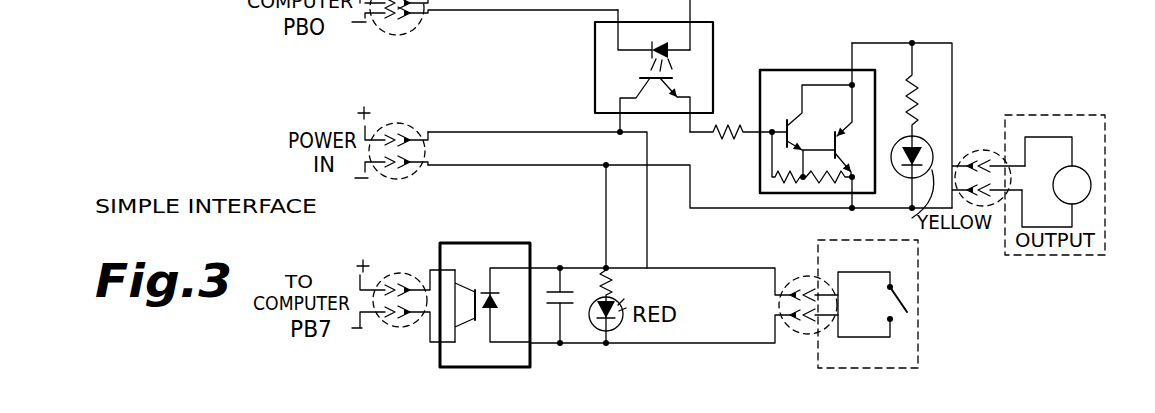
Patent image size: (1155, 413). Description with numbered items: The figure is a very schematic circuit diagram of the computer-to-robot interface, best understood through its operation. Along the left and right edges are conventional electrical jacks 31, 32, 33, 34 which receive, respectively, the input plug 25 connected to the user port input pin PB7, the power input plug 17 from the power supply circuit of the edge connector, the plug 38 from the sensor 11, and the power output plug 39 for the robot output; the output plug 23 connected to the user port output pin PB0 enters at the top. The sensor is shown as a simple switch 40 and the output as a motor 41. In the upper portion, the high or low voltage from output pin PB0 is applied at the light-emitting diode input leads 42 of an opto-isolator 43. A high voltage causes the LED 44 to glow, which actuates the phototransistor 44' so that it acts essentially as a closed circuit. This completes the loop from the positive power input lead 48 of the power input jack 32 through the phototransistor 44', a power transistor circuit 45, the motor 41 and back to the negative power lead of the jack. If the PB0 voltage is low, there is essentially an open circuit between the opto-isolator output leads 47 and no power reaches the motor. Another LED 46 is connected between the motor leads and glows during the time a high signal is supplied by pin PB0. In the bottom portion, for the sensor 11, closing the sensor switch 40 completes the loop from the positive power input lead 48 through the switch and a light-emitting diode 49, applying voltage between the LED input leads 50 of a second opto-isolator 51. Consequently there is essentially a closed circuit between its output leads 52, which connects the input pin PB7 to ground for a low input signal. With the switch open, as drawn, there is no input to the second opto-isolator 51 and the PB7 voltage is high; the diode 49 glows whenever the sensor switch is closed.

The sensor 11 is at (918, 337).
The power input plug 17 is at (377, 142).
The output plug 23 is at (378, 6).
The input plug 25 is at (377, 322).
The electrical jack 31 is at (405, 270).
The power input jack 32 is at (412, 124).
The electrical jack 33 is at (800, 277).
The electrical jack 34 is at (982, 148).
The sensor plug 38 is at (865, 304).
The power output plug 39 is at (1012, 168).
The sensor switch 40 is at (907, 298).
The motor 41 is at (1090, 170).
The light-emitting diode input leads 42 is at (613, 12).
The opto-isolator 43 is at (713, 38).
The LED 44 is at (687, 40).
The phototransistor 44' is at (618, 95).
The power transistor circuit 45 is at (876, 96).
The LED 46 is at (918, 132).
The opto-isolator output leads 47 is at (702, 193).
The positive power input lead 48 is at (486, 131).
The light-emitting diode 49 is at (625, 301).
The LED input leads 50 is at (556, 265).
The second opto-isolator 51 is at (495, 243).
The output leads 52 is at (437, 242).